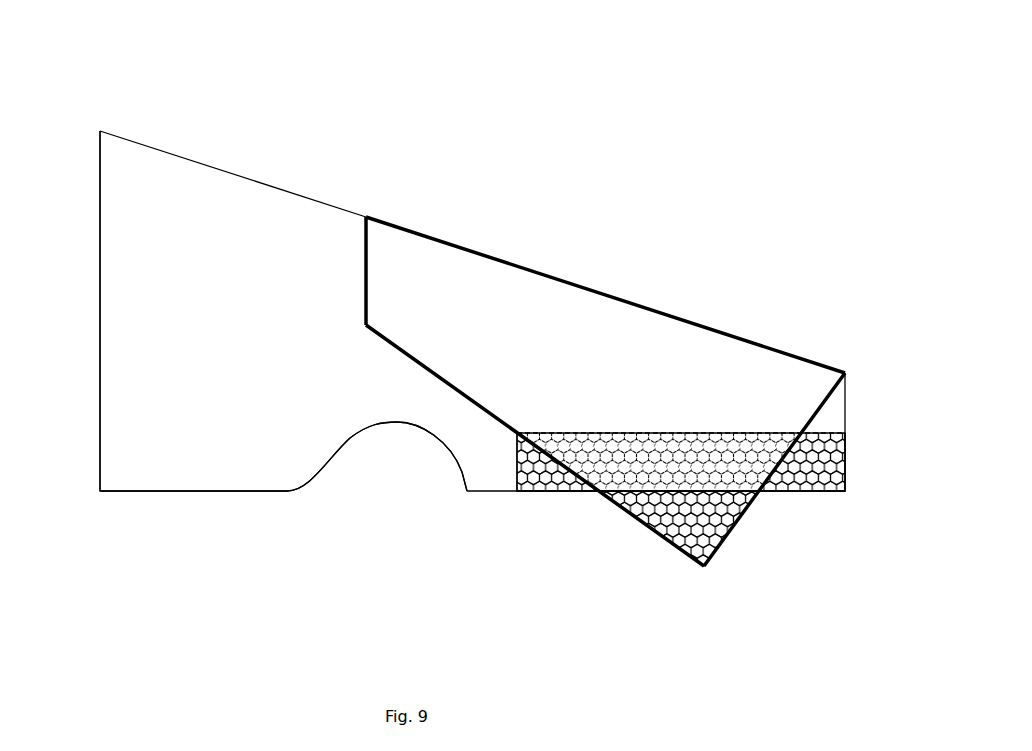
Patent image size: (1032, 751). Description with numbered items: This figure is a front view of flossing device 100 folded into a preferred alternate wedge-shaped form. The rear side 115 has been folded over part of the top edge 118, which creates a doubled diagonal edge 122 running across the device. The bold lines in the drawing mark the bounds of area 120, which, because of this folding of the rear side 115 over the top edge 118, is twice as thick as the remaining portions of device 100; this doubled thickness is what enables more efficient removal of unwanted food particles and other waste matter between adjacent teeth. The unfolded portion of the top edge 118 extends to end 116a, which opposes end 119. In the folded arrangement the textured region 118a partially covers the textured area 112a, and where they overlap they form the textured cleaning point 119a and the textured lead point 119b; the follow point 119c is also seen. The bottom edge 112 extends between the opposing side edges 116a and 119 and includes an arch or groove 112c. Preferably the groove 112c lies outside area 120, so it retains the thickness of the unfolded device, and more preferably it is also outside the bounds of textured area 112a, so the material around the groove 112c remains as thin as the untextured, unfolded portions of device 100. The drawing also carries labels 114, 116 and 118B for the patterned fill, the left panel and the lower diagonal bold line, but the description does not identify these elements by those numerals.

The flossing device 100 is at (691, 104).
The bottom edge 112 is at (215, 491).
The textured area 112a is at (817, 467).
The arch or groove 112c is at (373, 428).
The fill material 114 is at (593, 452).
The rear side 115 is at (537, 319).
The body 116 is at (283, 311).
The end 116a is at (142, 332).
The top edge 118 is at (277, 185).
The textured region 118a is at (728, 537).
The panel first leg 118B is at (433, 373).
The end 119 is at (845, 393).
The textured cleaning point 119a is at (845, 491).
The textured lead point 119b is at (704, 567).
The follow point 119c is at (845, 373).
The area 120 is at (397, 282).
The doubled diagonal edge 122 is at (640, 307).